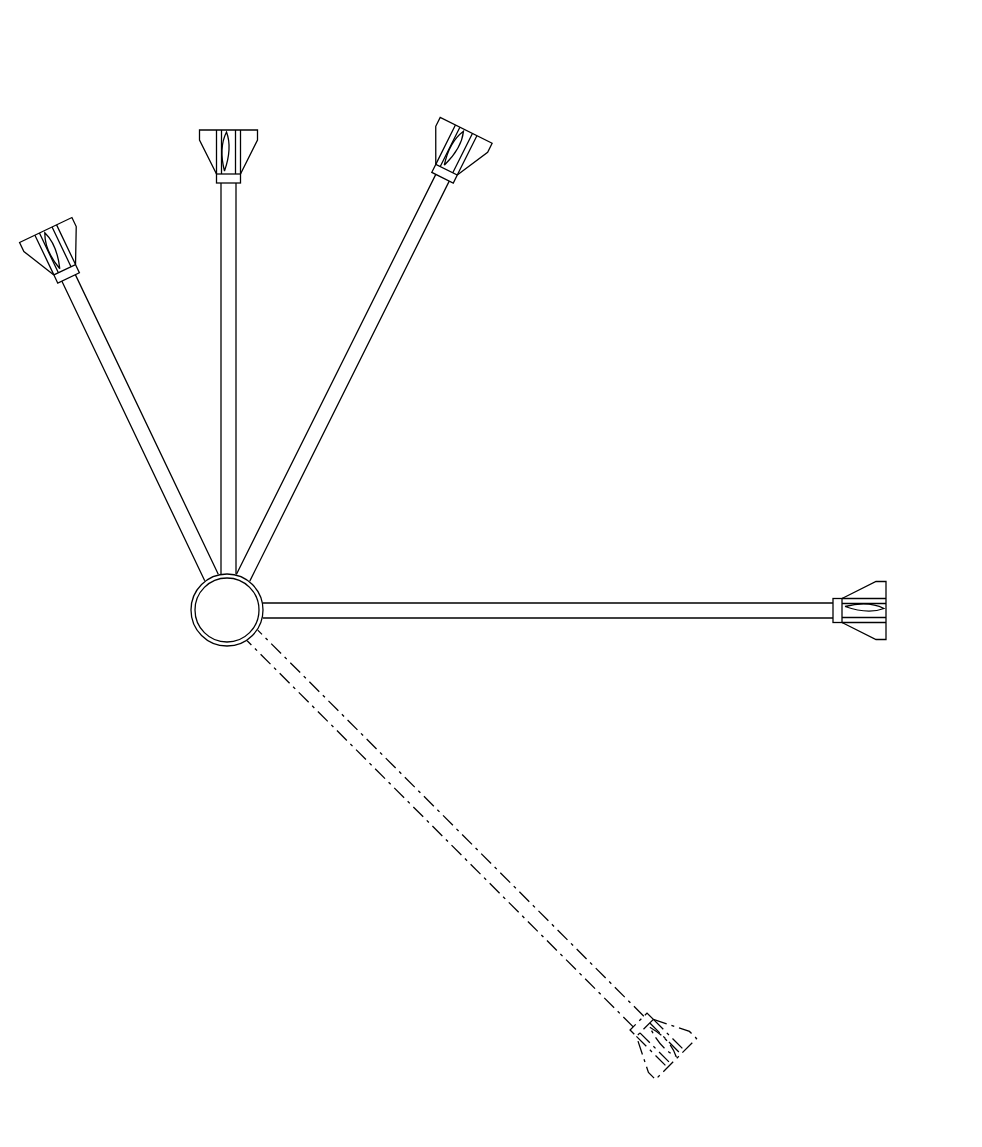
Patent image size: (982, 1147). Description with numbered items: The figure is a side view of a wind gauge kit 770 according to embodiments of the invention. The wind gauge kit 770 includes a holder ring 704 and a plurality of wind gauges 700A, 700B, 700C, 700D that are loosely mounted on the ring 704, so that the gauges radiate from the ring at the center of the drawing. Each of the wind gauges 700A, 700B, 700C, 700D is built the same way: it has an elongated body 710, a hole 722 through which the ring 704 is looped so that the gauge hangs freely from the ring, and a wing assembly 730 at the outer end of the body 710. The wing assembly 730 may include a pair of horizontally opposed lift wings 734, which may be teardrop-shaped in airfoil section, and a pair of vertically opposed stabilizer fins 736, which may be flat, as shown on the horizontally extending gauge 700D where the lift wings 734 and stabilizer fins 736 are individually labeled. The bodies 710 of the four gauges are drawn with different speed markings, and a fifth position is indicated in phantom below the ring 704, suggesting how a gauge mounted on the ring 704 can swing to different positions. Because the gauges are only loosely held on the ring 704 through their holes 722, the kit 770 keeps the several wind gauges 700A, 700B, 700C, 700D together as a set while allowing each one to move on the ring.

The wind gauge kit 770 is at (522, 58).
The wind gauge 700A is at (110, 343).
The wind gauge 700B is at (238, 298).
The wind gauge 700C is at (402, 240).
The wind gauge 700D is at (574, 594).
The holder ring 704 is at (205, 632).
The body 710 is at (652, 600).
The hole 722 is at (262, 585).
The wing assembly 730 is at (859, 611).
The lift wings 734 is at (837, 611).
The stabilizer fins 736 is at (864, 611).